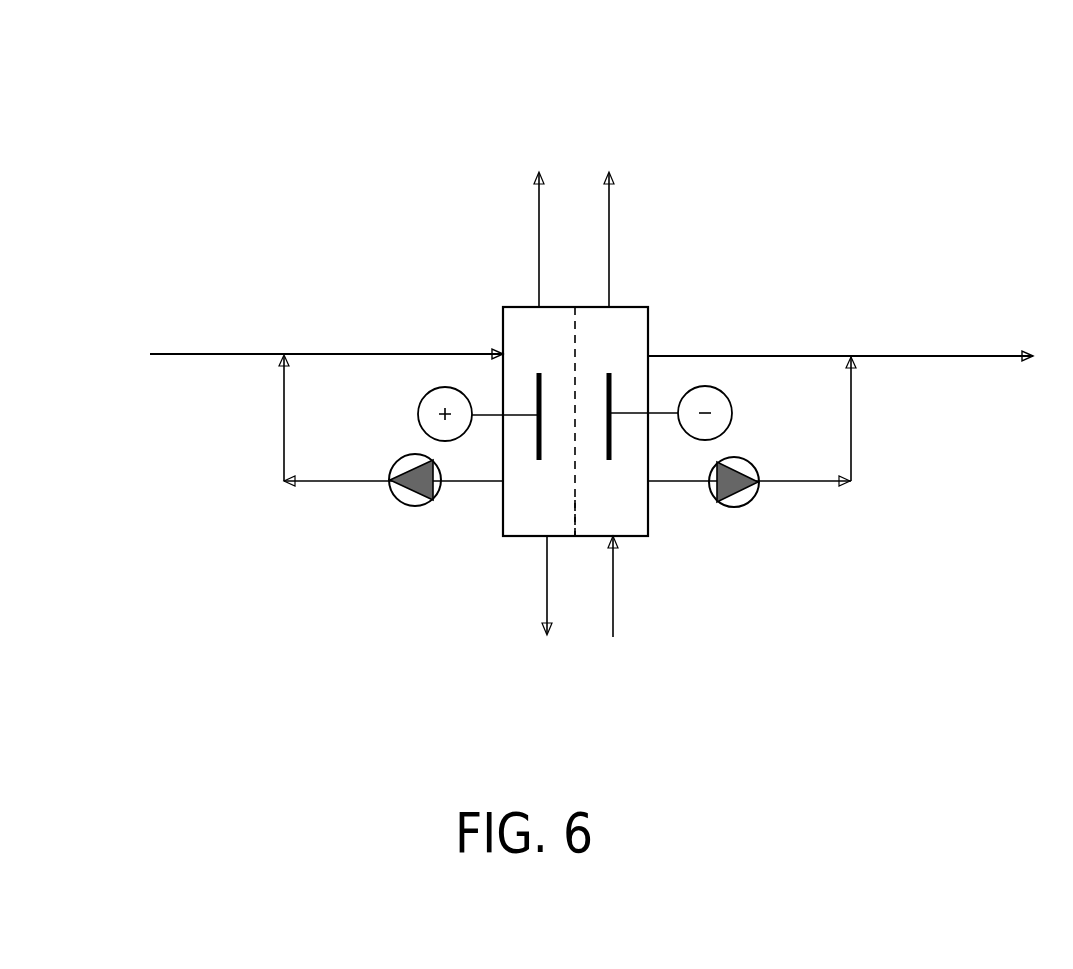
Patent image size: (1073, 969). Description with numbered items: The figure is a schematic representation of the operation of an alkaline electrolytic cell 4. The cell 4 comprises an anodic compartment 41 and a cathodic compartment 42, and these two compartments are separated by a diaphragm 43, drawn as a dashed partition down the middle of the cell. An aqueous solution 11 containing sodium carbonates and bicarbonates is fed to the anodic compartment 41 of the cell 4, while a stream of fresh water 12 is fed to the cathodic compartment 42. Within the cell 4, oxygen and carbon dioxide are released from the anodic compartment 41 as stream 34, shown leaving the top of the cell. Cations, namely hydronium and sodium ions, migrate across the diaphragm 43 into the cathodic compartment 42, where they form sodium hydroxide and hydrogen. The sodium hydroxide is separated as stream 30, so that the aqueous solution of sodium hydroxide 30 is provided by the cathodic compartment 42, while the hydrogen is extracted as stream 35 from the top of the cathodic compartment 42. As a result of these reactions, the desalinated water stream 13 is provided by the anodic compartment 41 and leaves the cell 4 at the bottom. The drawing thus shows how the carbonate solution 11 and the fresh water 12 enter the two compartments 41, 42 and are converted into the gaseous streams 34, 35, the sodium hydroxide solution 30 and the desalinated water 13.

The alkaline electrolytic cell 4 is at (899, 151).
The aqueous solution 11 is at (236, 354).
The stream of fresh water 12 is at (615, 613).
The desalinated water stream 13 is at (545, 590).
The aqueous solution of sodium hydroxide 30 is at (982, 356).
The stream of oxygen and carbon dioxide 34 is at (537, 228).
The hydrogen stream 35 is at (612, 227).
The anodic compartment 41 is at (525, 336).
The cathodic compartment 42 is at (620, 346).
The diaphragm 43 is at (578, 520).